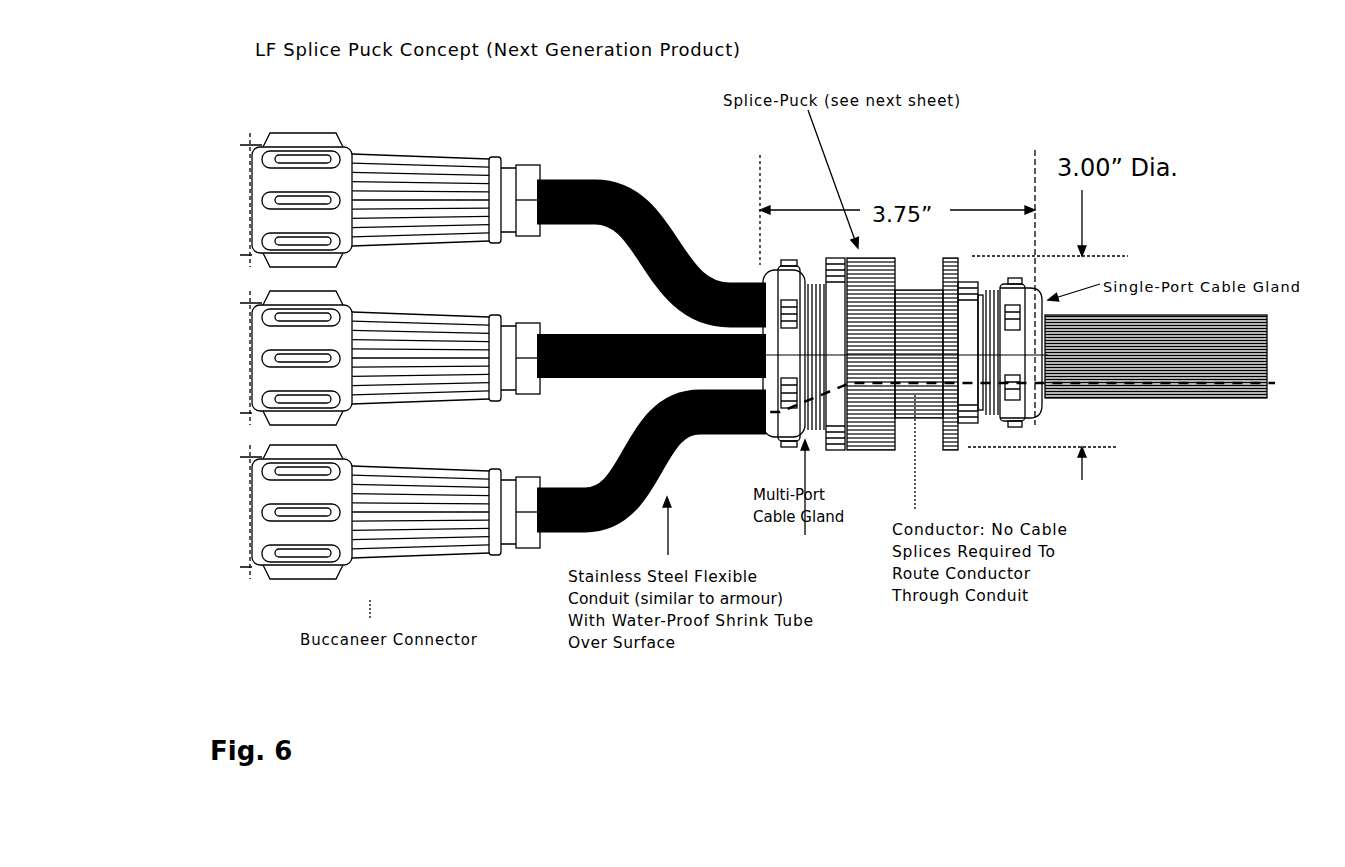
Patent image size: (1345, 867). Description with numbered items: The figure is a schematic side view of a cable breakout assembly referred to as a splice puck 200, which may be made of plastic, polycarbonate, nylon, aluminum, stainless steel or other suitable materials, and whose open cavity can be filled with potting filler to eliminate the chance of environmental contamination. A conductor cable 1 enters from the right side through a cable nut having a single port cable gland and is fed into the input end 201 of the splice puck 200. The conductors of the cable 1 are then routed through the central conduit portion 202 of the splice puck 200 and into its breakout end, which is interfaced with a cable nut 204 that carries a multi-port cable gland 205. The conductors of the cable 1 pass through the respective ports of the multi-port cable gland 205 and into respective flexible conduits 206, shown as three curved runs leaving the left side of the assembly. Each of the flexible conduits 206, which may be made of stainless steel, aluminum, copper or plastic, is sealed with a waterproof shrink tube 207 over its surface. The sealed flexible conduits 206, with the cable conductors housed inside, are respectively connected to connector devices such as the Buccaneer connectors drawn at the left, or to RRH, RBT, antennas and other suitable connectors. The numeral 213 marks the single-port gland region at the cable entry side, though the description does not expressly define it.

The conductor cable 1 is at (1158, 400).
The splice puck 200 is at (927, 358).
The input end 201 is at (956, 268).
The central conduit portion 202 is at (915, 290).
The cable nut 204 is at (820, 258).
The multi-port cable gland 205 is at (878, 265).
The flexible conduits 206 is at (588, 190).
The waterproof shrink tubes 207 is at (637, 258).
The single-port cable gland 213 is at (965, 440).